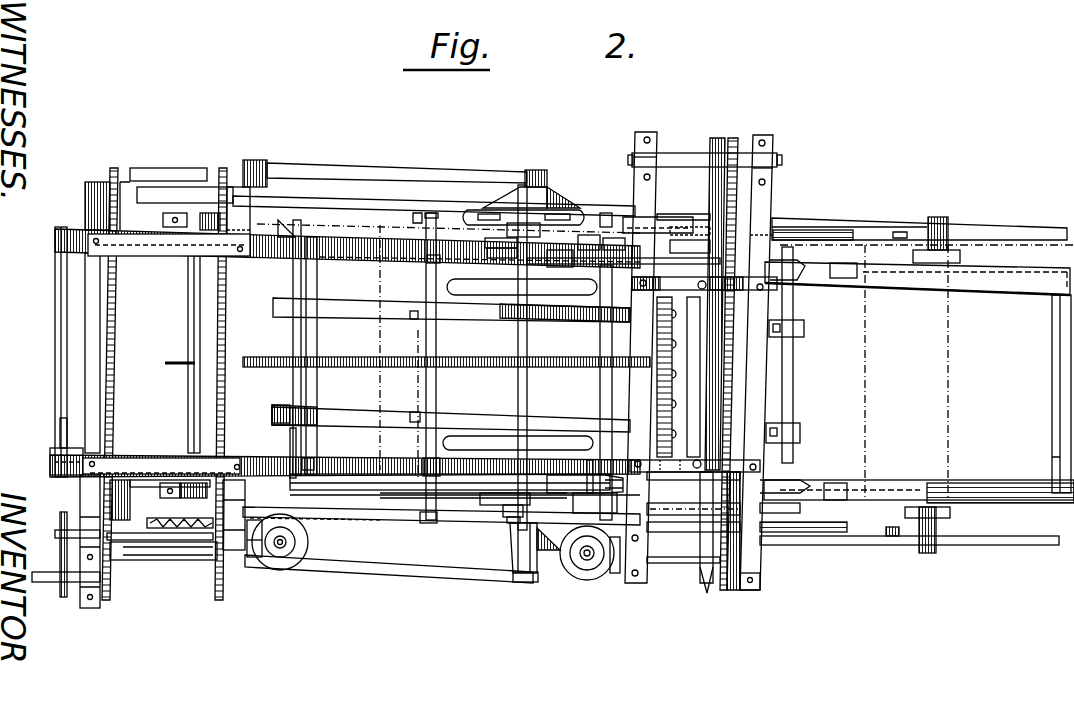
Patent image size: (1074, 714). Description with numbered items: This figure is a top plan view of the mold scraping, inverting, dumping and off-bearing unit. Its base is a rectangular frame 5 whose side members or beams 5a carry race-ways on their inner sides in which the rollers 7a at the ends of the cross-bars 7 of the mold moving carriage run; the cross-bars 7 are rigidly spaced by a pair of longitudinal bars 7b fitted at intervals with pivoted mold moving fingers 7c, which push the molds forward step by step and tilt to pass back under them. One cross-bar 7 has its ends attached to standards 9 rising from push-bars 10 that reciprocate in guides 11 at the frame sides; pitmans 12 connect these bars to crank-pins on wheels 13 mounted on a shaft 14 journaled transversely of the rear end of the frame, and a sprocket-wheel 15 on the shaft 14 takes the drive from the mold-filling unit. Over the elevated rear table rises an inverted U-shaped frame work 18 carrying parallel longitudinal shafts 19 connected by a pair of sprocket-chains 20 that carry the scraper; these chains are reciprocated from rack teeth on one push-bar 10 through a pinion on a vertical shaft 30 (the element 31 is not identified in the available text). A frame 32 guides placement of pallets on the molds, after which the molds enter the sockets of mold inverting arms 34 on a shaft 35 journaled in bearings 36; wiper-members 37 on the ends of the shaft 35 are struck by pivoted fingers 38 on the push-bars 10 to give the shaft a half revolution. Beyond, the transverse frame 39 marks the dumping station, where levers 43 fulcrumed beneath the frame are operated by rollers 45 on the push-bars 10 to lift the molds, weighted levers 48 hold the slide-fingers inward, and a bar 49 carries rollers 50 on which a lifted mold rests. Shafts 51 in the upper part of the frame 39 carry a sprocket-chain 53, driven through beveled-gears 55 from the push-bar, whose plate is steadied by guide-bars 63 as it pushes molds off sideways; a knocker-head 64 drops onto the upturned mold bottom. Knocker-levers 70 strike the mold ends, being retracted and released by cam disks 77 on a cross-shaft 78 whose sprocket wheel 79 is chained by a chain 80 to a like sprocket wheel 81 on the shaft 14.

The rectangular frame 5 is at (1063, 385).
The side members or beams 5a is at (915, 290).
The cross-bars 7 is at (316, 345).
The rollers 7a is at (315, 461).
The longitudinal bars 7b is at (392, 313).
The pivoted mold moving fingers 7c is at (412, 319).
The arms or standards 9 is at (437, 523).
The push-bars 10 is at (375, 205).
The guides 11 is at (122, 505).
The pitmans 12 is at (437, 172).
The wheels 13 is at (177, 177).
The shaft 14 is at (190, 412).
The sprocket-wheel 15 is at (175, 530).
The inverted U-shaped frame work 18 is at (93, 405).
The parallel longitudinally disposed shafts 19 is at (153, 190).
The sprocket-chains 20 is at (116, 300).
The vertical shaft 30 is at (288, 543).
The wheel bracket 31 is at (268, 572).
The frame 32 is at (290, 441).
The mold inverting arms 34 is at (495, 296).
The shaft 35 is at (527, 348).
The bearings 36 is at (510, 248).
The wiper-member 37 is at (520, 215).
The pivoted finger 38 is at (606, 213).
The frame 39 is at (766, 210).
The lever 43 is at (807, 530).
The roller 45 is at (890, 537).
The weighted levers 48 is at (615, 265).
The bar 49 is at (690, 380).
The rollers 50 is at (663, 358).
The shaft 51 is at (684, 153).
The sprocket-chain 53 is at (733, 388).
The beveled-gears 55 is at (612, 580).
The guide-bars 63 is at (737, 590).
The knocker-head 64 is at (745, 413).
The knocker-levers 70 is at (585, 238).
The disk 77 is at (630, 228).
The cross-shaft 78 is at (605, 400).
The sprocket wheel 79 is at (509, 310).
The chain 80 is at (457, 430).
The sprocket wheel 81 is at (180, 362).